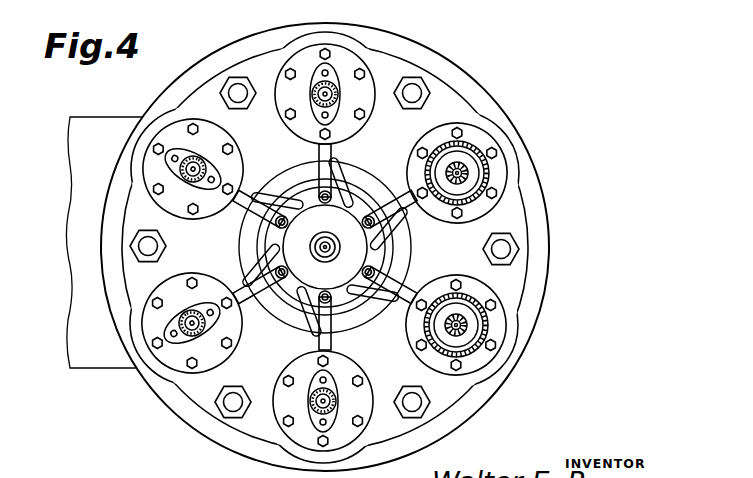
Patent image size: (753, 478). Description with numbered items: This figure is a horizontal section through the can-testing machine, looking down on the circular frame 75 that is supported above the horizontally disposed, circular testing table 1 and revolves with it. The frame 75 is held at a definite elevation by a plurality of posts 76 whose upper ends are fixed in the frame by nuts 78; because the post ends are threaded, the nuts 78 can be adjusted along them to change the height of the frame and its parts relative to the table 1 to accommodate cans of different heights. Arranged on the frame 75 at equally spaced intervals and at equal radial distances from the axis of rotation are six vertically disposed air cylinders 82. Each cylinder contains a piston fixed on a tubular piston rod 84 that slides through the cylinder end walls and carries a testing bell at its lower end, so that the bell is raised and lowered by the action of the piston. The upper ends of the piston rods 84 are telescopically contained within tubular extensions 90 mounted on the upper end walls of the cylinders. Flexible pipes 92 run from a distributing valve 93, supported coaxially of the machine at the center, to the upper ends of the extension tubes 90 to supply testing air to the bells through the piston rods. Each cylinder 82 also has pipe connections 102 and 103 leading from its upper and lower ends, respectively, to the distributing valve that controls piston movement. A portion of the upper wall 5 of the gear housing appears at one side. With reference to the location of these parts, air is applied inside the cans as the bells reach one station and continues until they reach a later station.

The testing table 1 is at (547, 307).
The upper wall of housing 5 is at (78, 330).
The circular frame 75 is at (513, 213).
The posts 76 is at (506, 254).
The nuts 78 is at (518, 245).
The air cylinders 82 is at (489, 174).
The piston rod 84 is at (468, 176).
The tubular extensions 90 is at (188, 323).
The flexible pipes 92 is at (335, 190).
The distributing valve 93 is at (347, 253).
The pipe connections 102 is at (260, 248).
The pipe connections 103 is at (252, 277).